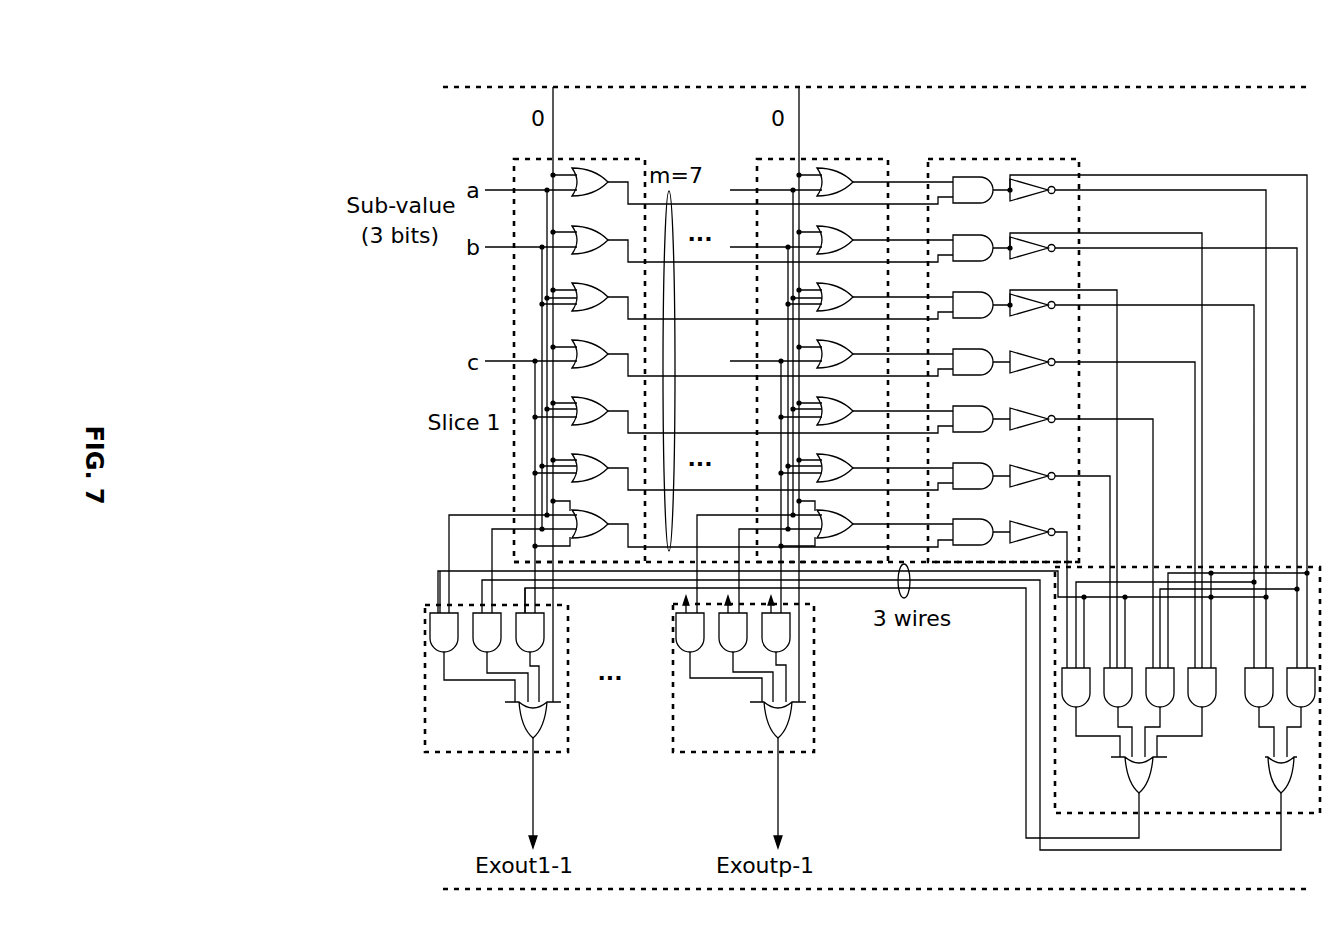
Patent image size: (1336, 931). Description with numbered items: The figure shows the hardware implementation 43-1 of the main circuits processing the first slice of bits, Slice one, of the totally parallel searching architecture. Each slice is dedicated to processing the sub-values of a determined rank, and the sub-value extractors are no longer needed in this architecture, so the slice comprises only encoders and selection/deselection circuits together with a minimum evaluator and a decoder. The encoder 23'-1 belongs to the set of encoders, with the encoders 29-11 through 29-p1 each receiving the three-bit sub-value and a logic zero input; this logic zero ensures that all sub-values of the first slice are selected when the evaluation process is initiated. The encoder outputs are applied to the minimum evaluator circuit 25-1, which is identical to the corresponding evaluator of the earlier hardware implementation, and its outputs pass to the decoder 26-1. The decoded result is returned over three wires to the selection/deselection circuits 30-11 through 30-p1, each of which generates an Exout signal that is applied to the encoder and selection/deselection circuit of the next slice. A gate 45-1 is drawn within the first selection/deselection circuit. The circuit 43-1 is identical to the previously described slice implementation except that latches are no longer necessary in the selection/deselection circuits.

The physical implementation of the first slice circuit 43-1 is at (1218, 66).
The encoder 23'-1 is at (676, 378).
The encoder 29-11 is at (617, 157).
The encoder 29-p1 is at (852, 155).
The minimum evaluator circuit 25-1 is at (1025, 155).
The decoder 26-1 is at (1053, 755).
The selection/deselection circuit 30-11 is at (531, 709).
The selection/deselection circuit 30-p1 is at (718, 752).
The AND gate of output logic block 45-1 is at (553, 645).